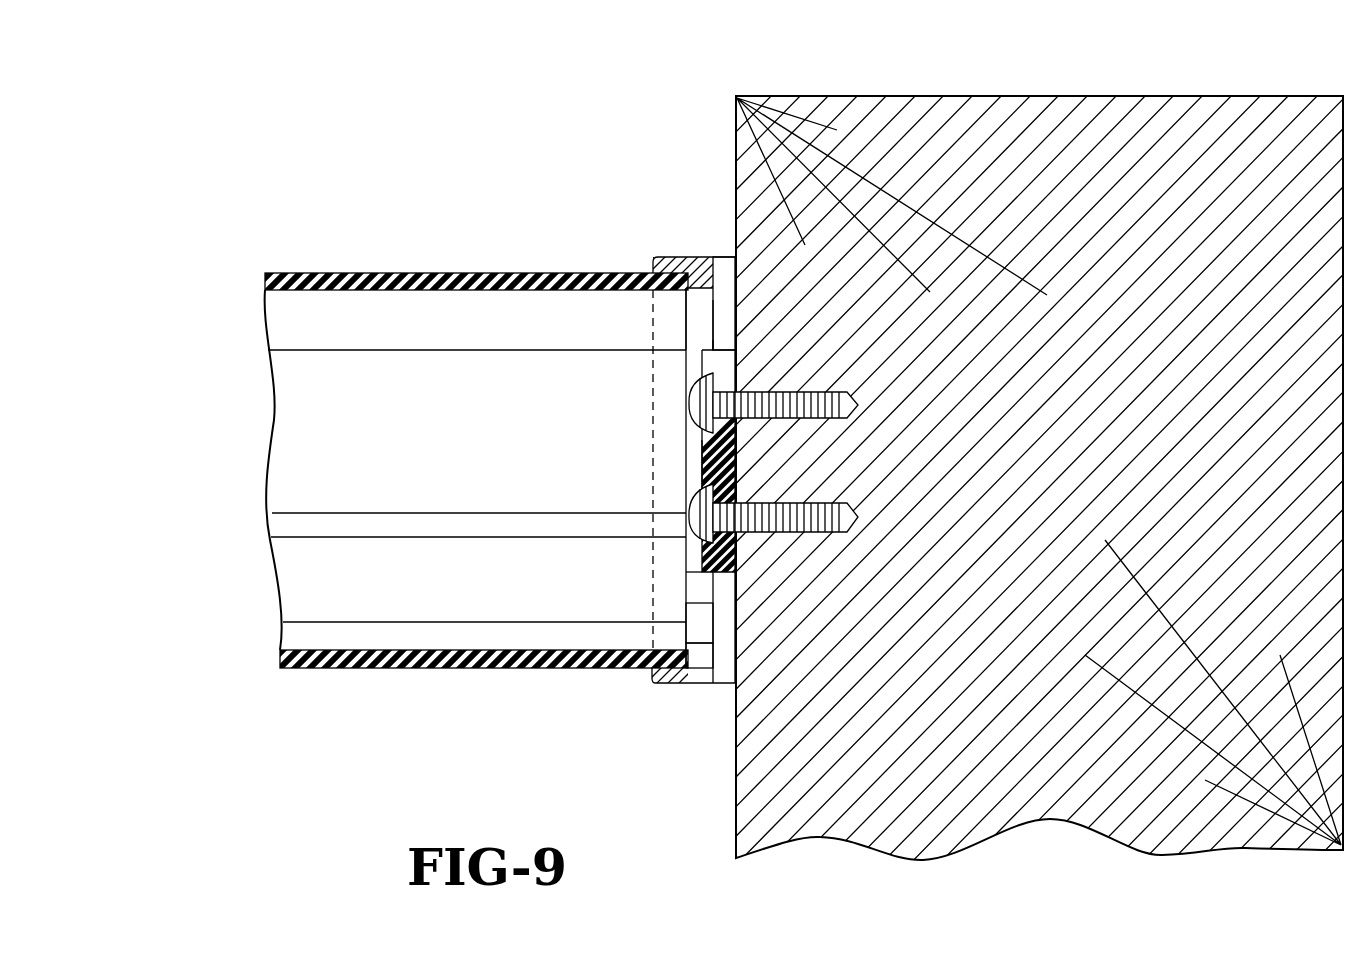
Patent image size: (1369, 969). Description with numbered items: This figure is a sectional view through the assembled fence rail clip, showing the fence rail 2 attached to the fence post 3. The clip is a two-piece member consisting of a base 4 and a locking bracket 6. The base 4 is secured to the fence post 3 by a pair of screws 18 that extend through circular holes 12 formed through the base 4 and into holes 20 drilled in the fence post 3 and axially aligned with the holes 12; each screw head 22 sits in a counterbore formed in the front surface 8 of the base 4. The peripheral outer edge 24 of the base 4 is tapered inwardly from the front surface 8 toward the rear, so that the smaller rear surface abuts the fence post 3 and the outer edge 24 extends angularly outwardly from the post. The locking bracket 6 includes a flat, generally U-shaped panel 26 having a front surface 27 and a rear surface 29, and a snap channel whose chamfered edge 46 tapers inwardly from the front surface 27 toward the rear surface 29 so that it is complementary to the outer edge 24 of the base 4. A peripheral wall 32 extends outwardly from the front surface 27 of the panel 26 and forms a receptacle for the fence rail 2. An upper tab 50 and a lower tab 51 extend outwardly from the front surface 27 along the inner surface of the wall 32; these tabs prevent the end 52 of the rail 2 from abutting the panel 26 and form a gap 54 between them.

The fence rail 2 is at (365, 273).
The fence post 3 is at (1105, 96).
The base 4 is at (695, 478).
The locking bracket 6 is at (658, 243).
The front surface 8 is at (704, 455).
The circular holes 12 is at (745, 400).
The screws 18 is at (800, 410).
The holes 20 is at (775, 405).
The screw head 22 is at (700, 410).
The peripheral outer edge 24 is at (706, 570).
The panel 26 is at (740, 292).
The front surface 27 is at (706, 338).
The rear surface 29 is at (735, 330).
The peripheral wall 32 is at (660, 686).
The chamfered edge 46 is at (727, 652).
The upper tab 50 is at (690, 258).
The lower tab 51 is at (700, 658).
The end 52 is at (688, 326).
The gap 54 is at (700, 633).